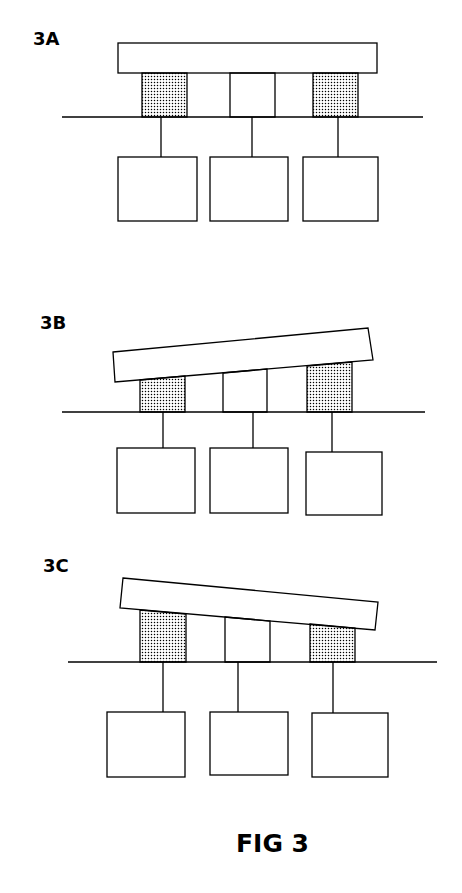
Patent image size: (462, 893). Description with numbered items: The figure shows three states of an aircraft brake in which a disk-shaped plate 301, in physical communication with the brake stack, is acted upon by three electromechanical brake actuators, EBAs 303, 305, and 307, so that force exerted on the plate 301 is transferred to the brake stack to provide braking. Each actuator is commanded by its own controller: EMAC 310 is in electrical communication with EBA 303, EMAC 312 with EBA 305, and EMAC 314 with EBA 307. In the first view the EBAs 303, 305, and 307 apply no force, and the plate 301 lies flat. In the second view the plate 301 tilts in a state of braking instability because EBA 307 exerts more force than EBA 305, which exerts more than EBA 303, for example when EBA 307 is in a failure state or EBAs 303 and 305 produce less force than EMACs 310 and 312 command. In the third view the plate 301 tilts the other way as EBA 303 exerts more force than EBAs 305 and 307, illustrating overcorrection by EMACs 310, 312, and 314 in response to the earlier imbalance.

In FIG. 3A, the plate 301 is at (348, 53).
In FIG. 3B, the plate 301 is at (347, 343).
In FIG. 3C, the plate 301 is at (355, 615).
In FIG. 3A, the EBA 303 is at (158, 107).
In FIG. 3B, the EBA 303 is at (155, 403).
In FIG. 3C, the EBA 303 is at (158, 653).
In FIG. 3A, the EBA 305 is at (240, 98).
In FIG. 3B, the EBA 305 is at (253, 402).
In FIG. 3C, the EBA 305 is at (248, 652).
In FIG. 3A, the EBA 307 is at (333, 107).
In FIG. 3B, the EBA 307 is at (333, 400).
In FIG. 3C, the EBA 307 is at (337, 652).
In FIG. 3A, the EMAC 310 is at (140, 212).
In FIG. 3B, the EMAC 310 is at (138, 503).
In FIG. 3C, the EMAC 310 is at (128, 767).
In FIG. 3A, the EMAC 312 is at (232, 212).
In FIG. 3B, the EMAC 312 is at (231, 503).
In FIG. 3C, the EMAC 312 is at (231, 767).
In FIG. 3A, the EMAC 314 is at (324, 212).
In FIG. 3B, the EMAC 314 is at (326, 506).
In FIG. 3C, the EMAC 314 is at (332, 767).